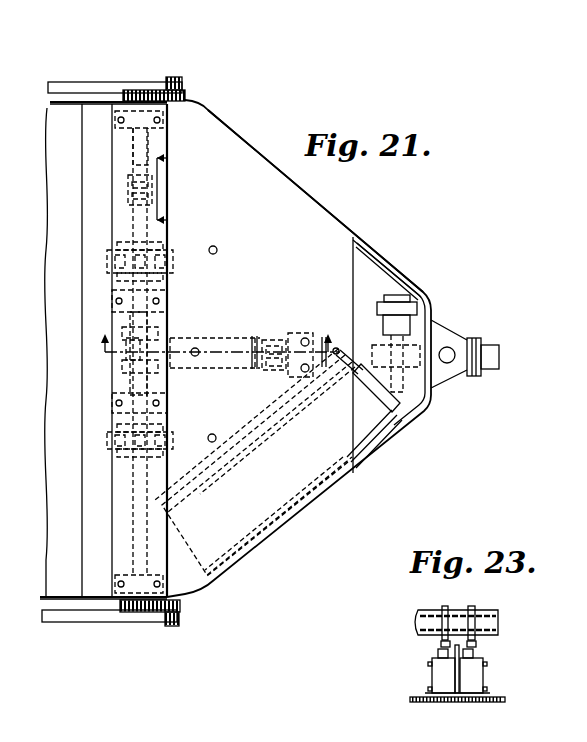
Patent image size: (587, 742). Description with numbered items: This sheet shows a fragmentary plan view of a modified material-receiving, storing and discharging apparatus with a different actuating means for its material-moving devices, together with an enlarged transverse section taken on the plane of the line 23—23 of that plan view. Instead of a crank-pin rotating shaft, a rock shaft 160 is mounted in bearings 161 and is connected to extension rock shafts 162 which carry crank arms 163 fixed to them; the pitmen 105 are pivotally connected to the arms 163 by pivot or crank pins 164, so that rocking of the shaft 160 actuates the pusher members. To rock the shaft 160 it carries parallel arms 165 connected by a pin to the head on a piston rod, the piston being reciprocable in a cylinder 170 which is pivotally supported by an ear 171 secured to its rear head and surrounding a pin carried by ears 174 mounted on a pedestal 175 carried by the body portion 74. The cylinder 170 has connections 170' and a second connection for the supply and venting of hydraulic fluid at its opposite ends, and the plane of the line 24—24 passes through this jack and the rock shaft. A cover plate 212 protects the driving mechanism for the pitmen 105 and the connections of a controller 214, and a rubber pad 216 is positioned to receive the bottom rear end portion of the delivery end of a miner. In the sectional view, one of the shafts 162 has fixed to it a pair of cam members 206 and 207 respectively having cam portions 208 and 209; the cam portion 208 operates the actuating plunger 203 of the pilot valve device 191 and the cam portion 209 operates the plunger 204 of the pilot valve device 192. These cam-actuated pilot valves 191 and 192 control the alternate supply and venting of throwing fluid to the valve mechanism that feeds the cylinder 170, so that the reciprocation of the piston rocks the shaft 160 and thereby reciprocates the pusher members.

In FIG. 21, the pitmen 105 is at (108, 92).
In FIG. 21, the pivot or crank pins 164 is at (176, 78).
In FIG. 21, the crank arms 163 is at (186, 97).
In FIG. 21, the rubber pad 216 is at (153, 138).
In FIG. 21, the section line 23— 23 is at (175, 189).
In FIG. 21, the extension rock shafts 162 is at (133, 221).
In FIG. 23, the extension rock shafts 162 is at (425, 620).
In FIG. 21, the bearings 161 is at (160, 303).
In FIG. 21, the rock shaft 160 is at (150, 345).
In FIG. 21, the parallel arms 165 is at (130, 346).
In FIG. 21, the section line 24— 24 is at (217, 332).
In FIG. 21, the cylinder 170 is at (215, 367).
In FIG. 21, the connection 170' is at (218, 335).
In FIG. 21, the ear 171 is at (273, 343).
In FIG. 21, the ears 174 is at (276, 369).
In FIG. 21, the pedestal 175 is at (297, 336).
In FIG. 21, the controller 214 is at (363, 438).
In FIG. 21, the body portion 74 is at (368, 240).
In FIG. 23, the body portion 74 is at (468, 702).
In FIG. 21, the cover plate 212 is at (313, 212).
In FIG. 23, the cam member 206 is at (444, 608).
In FIG. 23, the cam member 207 is at (476, 610).
In FIG. 23, the cam portion 208 is at (441, 646).
In FIG. 23, the cam portion 209 is at (477, 646).
In FIG. 23, the actuating plunger 203 is at (437, 656).
In FIG. 23, the actuating plunger 204 is at (477, 655).
In FIG. 23, the pilot valve device 191 is at (428, 679).
In FIG. 23, the pilot valve device 192 is at (486, 679).